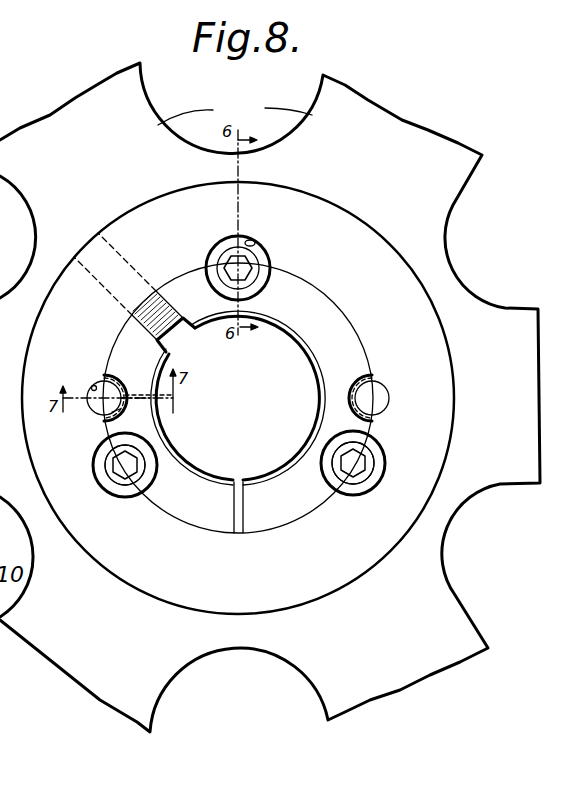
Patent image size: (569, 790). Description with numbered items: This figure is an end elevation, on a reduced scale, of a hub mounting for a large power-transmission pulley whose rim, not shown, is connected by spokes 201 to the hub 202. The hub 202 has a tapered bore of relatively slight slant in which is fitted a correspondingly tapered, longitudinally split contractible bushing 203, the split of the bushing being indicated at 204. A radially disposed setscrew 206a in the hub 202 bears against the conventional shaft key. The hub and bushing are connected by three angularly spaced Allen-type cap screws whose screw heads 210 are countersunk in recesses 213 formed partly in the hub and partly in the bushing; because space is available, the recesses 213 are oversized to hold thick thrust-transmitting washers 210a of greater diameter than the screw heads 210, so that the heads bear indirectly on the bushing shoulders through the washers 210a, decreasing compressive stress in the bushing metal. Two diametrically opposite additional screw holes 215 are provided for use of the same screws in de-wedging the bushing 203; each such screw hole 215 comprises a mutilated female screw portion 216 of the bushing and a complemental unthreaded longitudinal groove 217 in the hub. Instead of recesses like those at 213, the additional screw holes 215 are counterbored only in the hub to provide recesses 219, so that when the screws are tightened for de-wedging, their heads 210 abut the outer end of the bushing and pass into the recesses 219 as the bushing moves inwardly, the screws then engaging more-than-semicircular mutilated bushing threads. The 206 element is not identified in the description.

The spokes 201 is at (235, 111).
The hub 202 is at (351, 231).
The contractible bushing 203 is at (340, 333).
The split 204 is at (246, 505).
The clamping screw 206 is at (180, 330).
The setscrew 206a is at (135, 325).
The screw heads 210 is at (220, 262).
The thrust-transmitting washers 210a is at (395, 440).
The recesses 213 is at (255, 243).
The additional screw holes 215 is at (88, 407).
The mutilated female screw portions 216 is at (170, 394).
The longitudinal grooves 217 is at (92, 387).
The recesses 219 is at (127, 412).